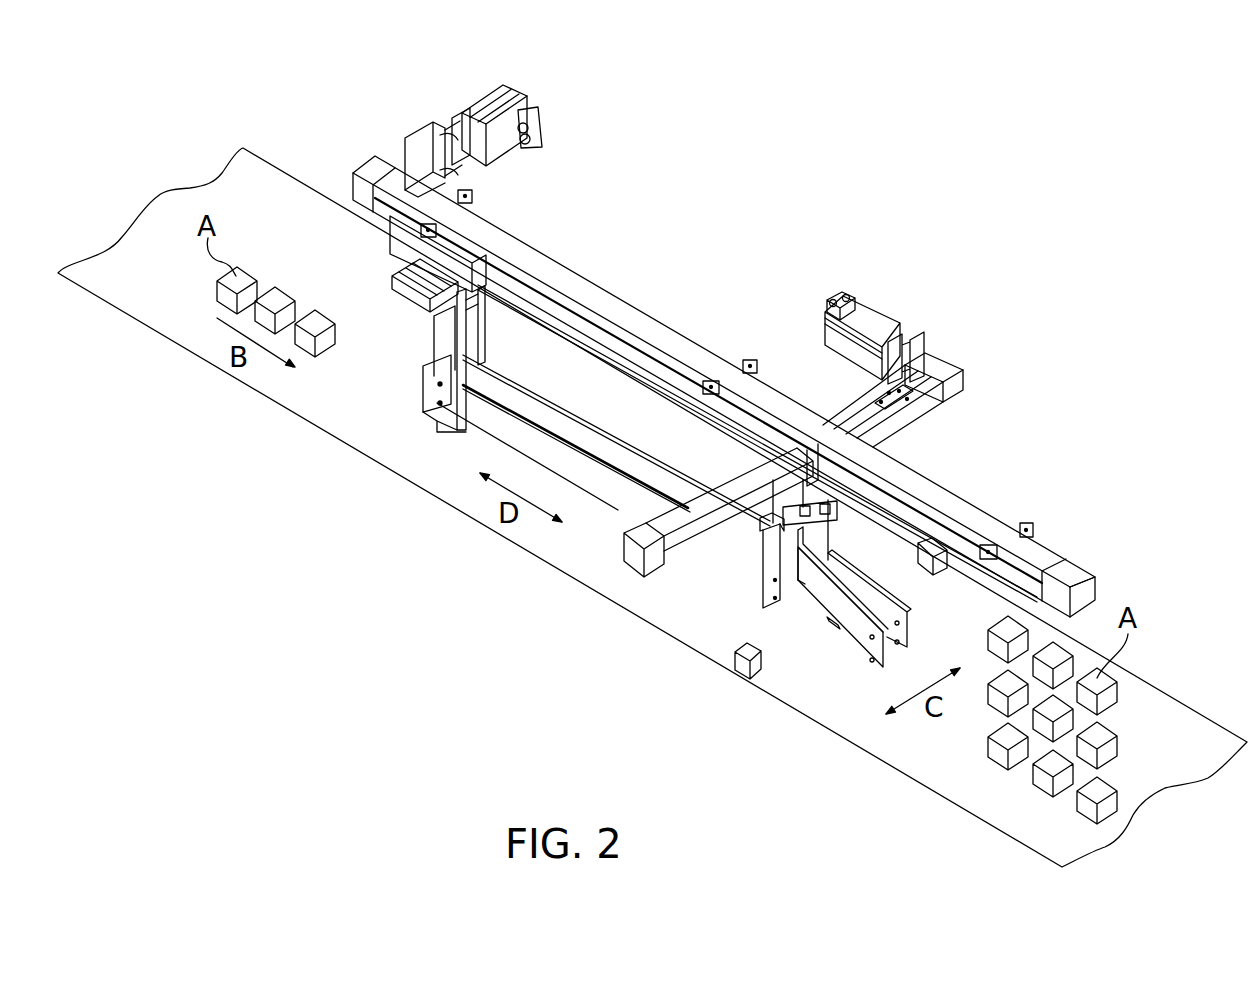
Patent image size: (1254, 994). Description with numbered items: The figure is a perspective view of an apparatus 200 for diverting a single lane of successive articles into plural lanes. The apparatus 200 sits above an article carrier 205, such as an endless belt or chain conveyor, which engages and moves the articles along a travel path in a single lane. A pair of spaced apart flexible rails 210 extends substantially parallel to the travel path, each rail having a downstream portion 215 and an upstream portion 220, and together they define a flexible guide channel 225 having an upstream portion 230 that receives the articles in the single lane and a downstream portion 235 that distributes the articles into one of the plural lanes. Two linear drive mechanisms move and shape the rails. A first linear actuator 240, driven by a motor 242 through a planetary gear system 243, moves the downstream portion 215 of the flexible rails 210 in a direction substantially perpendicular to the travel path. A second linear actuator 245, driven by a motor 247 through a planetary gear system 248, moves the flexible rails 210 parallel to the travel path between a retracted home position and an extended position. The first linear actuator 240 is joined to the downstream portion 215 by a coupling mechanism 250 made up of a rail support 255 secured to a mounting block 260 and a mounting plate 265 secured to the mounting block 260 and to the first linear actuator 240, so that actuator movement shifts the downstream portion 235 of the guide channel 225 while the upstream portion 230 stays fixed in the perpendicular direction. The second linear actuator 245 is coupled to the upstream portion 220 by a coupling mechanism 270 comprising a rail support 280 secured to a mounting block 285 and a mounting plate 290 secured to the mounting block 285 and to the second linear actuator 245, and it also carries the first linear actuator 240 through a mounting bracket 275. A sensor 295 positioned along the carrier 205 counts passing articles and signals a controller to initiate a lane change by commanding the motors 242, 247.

The apparatus 200 is at (782, 166).
The article carrier 205 is at (272, 193).
The flexible rails 210 is at (612, 440).
The downstream portion 215 is at (846, 660).
The upstream portion 220 is at (438, 422).
The flexible guide channel 225 is at (550, 425).
The upstream portion 230 is at (421, 383).
The downstream portion 235 is at (893, 664).
The first linear actuator 240 is at (920, 417).
The motor 242 is at (870, 308).
The planetary gear system 243 is at (957, 346).
The second linear actuator 245 is at (683, 350).
The motor 247 is at (516, 86).
The planetary gear system 248 is at (423, 120).
The coupling mechanism 250 is at (835, 548).
The rail support 255 is at (765, 612).
The mounting block 260 is at (803, 600).
The mounting plate 265 is at (828, 530).
The coupling mechanism 270 is at (477, 315).
The mounting bracket 275 is at (760, 442).
The rail support 280 is at (445, 330).
The mounting block 285 is at (393, 272).
The mounting plate 290 is at (418, 250).
The sensor 295 is at (740, 668).